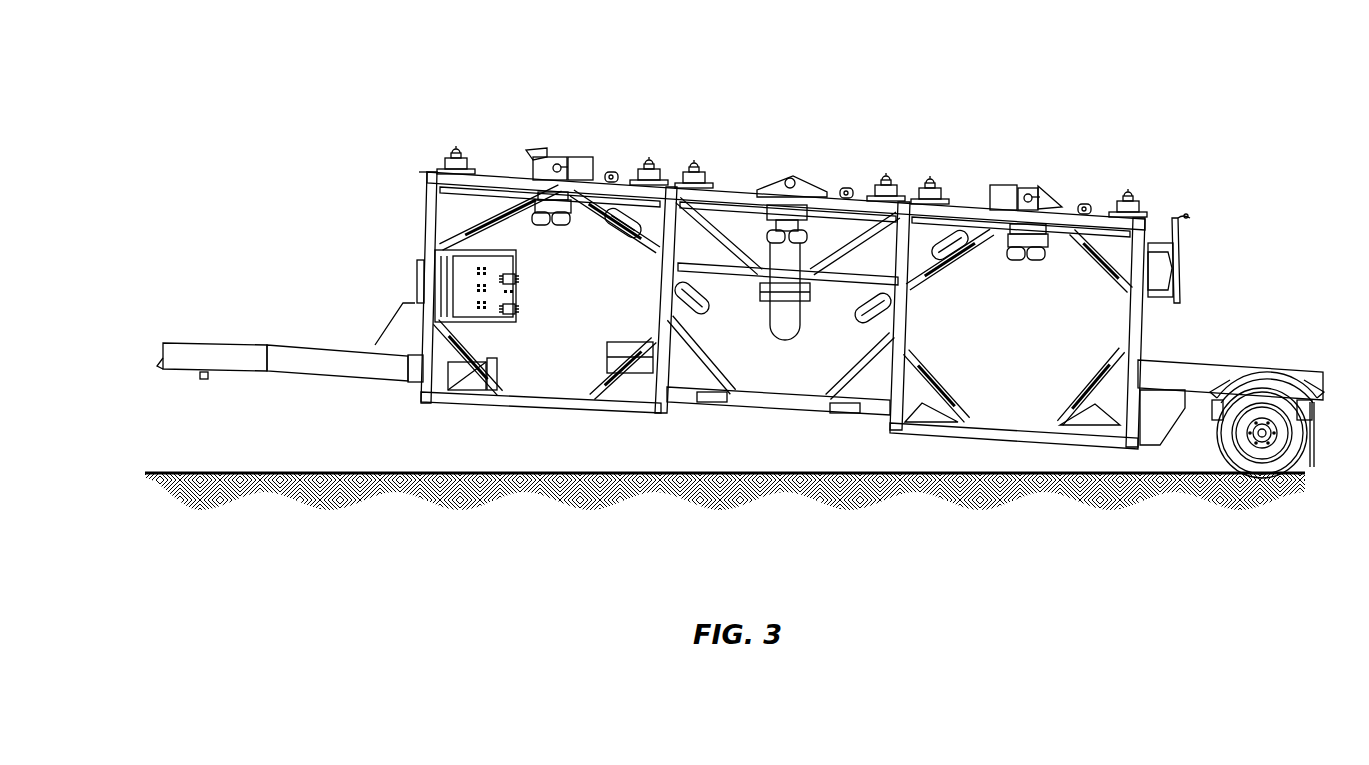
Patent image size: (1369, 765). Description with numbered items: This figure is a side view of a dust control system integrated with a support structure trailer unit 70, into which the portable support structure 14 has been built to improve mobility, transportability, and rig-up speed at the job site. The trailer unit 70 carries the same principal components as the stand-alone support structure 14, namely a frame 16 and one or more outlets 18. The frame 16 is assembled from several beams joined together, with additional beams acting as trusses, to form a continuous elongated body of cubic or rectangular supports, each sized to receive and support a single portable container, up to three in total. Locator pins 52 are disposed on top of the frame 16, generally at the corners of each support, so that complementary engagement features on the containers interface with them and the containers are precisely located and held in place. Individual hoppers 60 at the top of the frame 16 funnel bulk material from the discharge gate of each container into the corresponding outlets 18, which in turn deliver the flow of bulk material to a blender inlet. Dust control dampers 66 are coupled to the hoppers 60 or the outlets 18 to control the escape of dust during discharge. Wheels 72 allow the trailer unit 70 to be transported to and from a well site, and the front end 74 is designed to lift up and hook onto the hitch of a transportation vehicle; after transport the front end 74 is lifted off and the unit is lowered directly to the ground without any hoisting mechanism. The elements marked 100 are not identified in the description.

The support structure 14 is at (287, 85).
The frame 16 is at (895, 235).
The outlets 18 is at (637, 257).
The locator pins 52 is at (455, 147).
The hoppers 60 is at (522, 172).
The dust control dampers 66 is at (567, 203).
The support structure trailer unit 70 is at (288, 260).
The wheels 72 is at (1265, 385).
The front end 74 is at (186, 345).
The clamps 100 is at (565, 212).